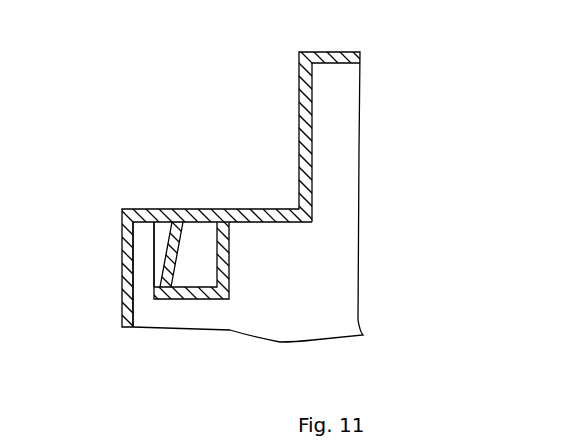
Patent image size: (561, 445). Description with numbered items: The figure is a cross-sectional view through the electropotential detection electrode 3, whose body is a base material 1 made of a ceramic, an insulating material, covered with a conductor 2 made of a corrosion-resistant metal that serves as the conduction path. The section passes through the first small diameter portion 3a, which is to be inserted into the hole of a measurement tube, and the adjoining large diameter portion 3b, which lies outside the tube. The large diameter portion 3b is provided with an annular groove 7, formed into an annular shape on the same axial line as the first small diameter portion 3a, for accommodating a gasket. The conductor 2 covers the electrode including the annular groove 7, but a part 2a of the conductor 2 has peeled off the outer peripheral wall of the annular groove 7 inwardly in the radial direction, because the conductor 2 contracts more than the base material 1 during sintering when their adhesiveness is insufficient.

The base material 1 is at (358, 130).
The conductor 2 is at (122, 243).
The part of the conductor 2a is at (183, 232).
The electropotential detection electrode 3 is at (288, 60).
The first small diameter portion 3a is at (298, 92).
The large diameter portion 3b is at (122, 287).
The annular groove 7 is at (197, 285).